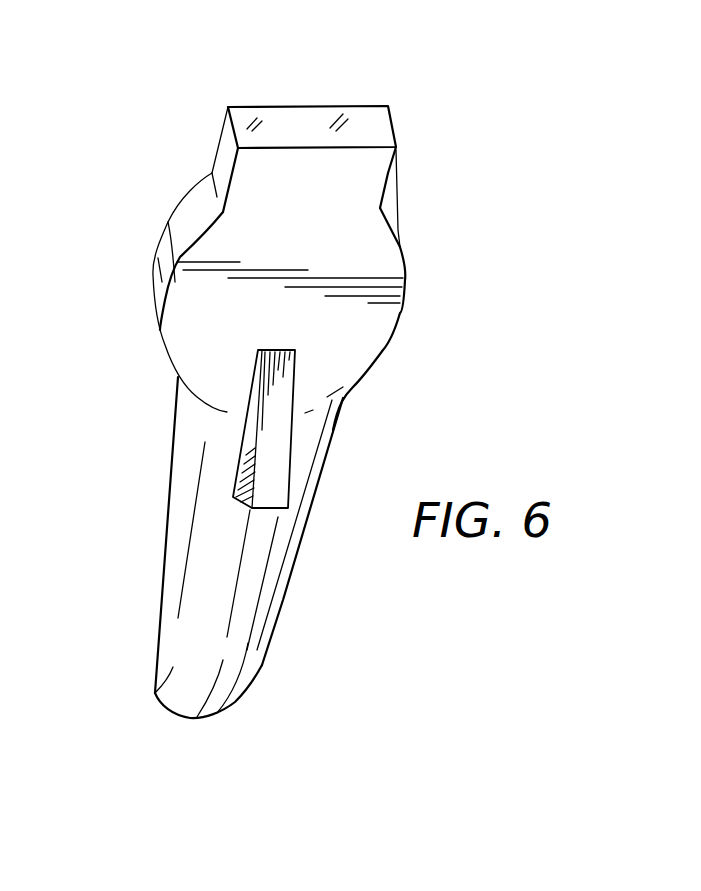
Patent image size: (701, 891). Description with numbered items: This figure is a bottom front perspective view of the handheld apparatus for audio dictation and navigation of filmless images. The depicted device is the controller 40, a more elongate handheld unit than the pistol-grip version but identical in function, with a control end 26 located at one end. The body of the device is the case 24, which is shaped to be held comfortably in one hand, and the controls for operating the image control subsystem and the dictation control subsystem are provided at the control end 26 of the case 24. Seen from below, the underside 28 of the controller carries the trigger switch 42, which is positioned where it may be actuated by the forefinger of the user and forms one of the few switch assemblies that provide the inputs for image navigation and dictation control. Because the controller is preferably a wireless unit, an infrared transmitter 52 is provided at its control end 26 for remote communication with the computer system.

The case 24 is at (183, 517).
The control end 26 is at (395, 163).
The underside 28 is at (243, 600).
The controller 40 is at (407, 322).
The trigger switch 42 is at (282, 478).
The infrared transmitter 52 is at (307, 118).